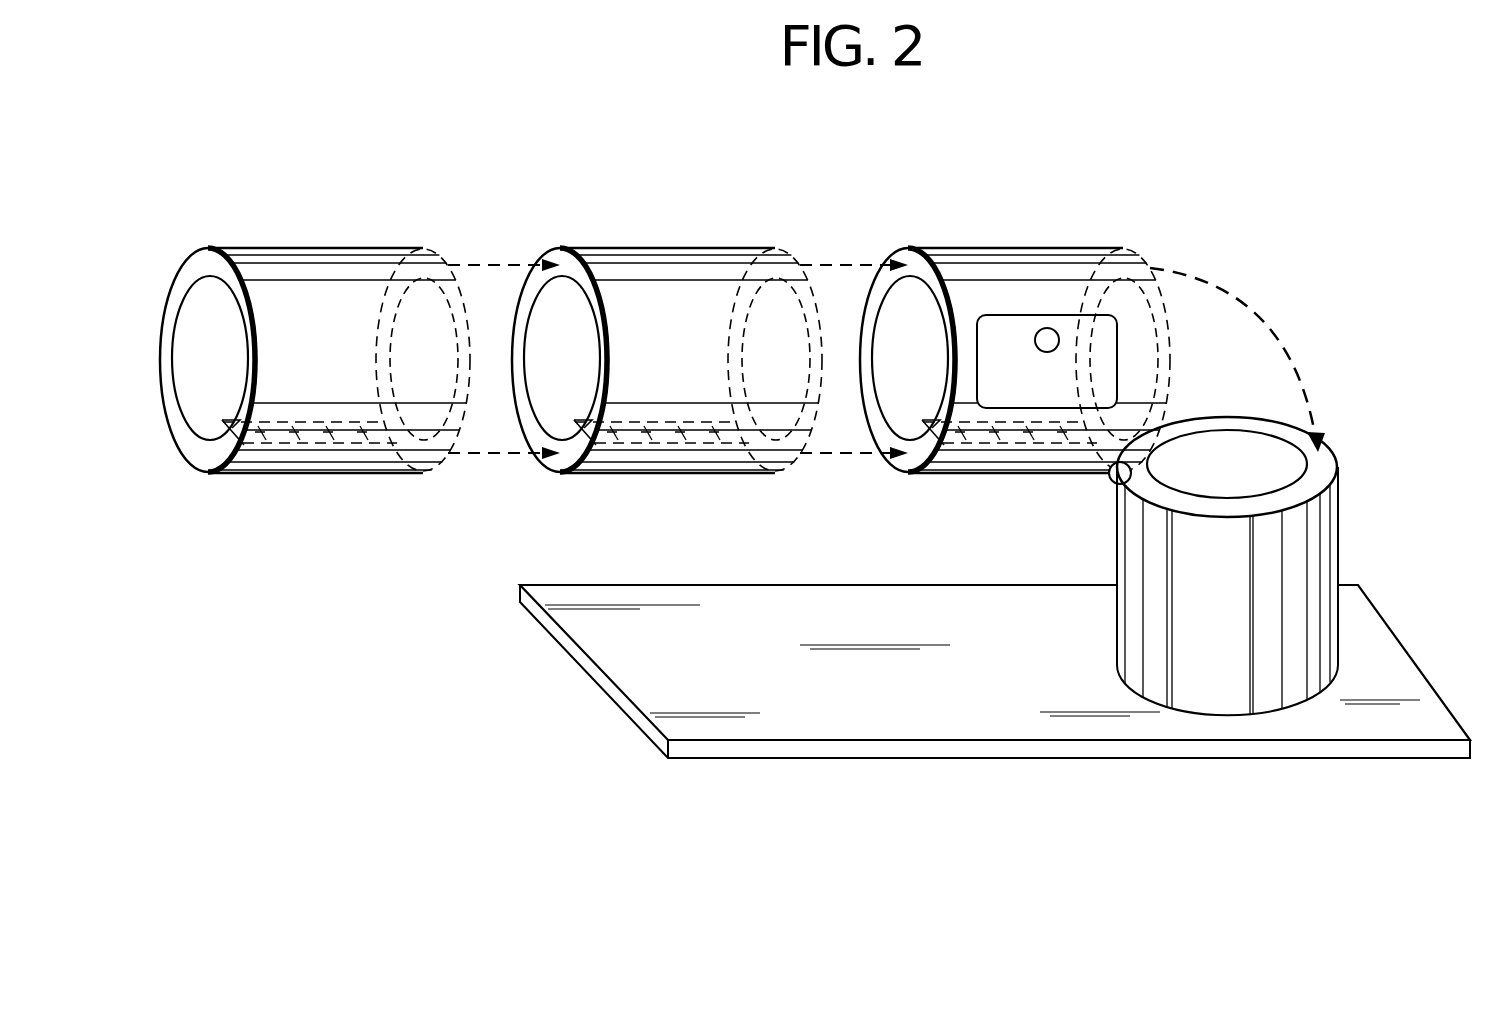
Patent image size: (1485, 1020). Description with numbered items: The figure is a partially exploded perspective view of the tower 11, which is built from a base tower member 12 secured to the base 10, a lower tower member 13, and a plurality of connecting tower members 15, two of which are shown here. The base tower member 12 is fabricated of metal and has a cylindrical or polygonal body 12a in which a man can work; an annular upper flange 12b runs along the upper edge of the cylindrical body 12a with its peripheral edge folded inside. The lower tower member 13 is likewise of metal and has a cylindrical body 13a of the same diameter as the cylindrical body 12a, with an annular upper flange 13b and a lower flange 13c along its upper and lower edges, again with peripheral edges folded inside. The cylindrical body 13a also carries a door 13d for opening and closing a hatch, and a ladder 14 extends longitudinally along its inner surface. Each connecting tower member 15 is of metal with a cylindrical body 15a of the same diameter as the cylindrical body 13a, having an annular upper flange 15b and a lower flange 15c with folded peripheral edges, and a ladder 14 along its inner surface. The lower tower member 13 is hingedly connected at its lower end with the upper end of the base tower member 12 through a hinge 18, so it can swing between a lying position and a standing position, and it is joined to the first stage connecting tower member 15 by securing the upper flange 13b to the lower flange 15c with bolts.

The base 10 is at (635, 682).
The tower 11 is at (670, 176).
The base tower member 12 is at (1350, 530).
The cylindrical body 12a is at (1325, 565).
The annular upper flange 12b is at (1325, 462).
The lower tower member 13 is at (962, 240).
The cylindrical body 13a is at (1047, 290).
The annular upper flange 13b is at (908, 322).
The lower flange 13c is at (1141, 321).
The door 13d is at (1085, 262).
The ladder 14 is at (329, 462).
The connecting tower member 15 is at (292, 240).
The cylindrical body 15a is at (362, 262).
The annular upper flange 15b is at (205, 262).
The lower flange 15c is at (423, 321).
The hinge 18 is at (1112, 483).